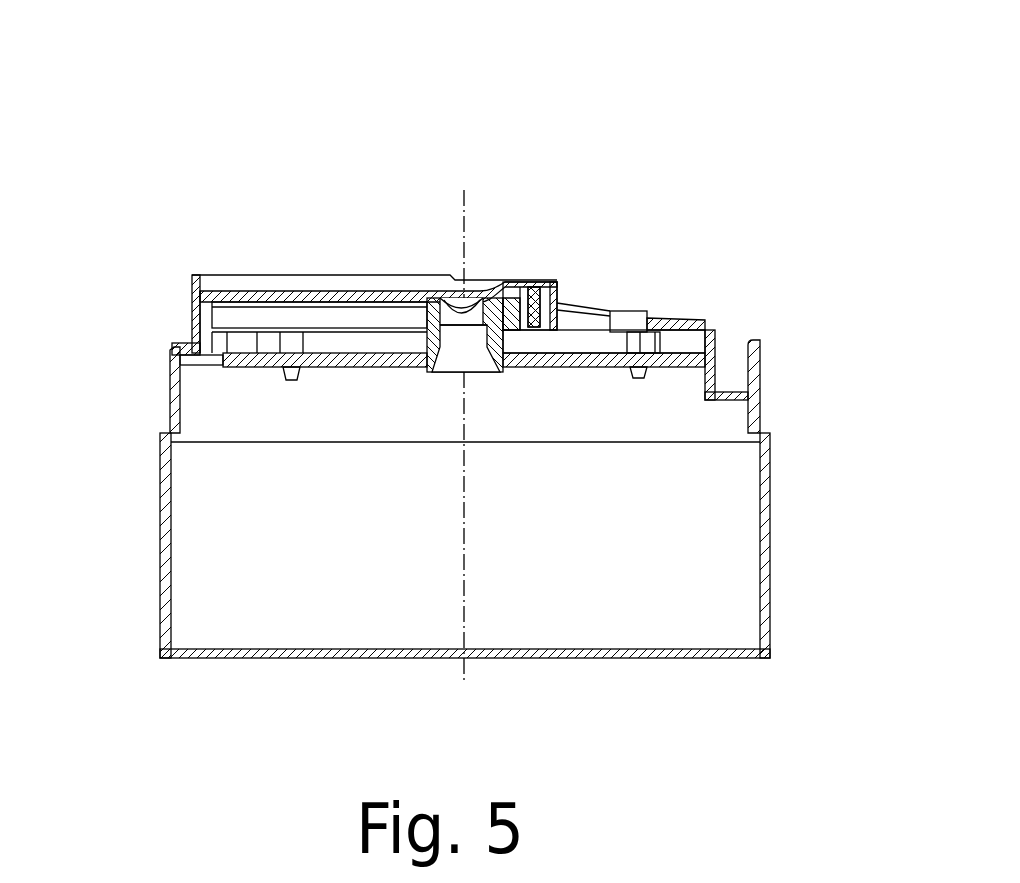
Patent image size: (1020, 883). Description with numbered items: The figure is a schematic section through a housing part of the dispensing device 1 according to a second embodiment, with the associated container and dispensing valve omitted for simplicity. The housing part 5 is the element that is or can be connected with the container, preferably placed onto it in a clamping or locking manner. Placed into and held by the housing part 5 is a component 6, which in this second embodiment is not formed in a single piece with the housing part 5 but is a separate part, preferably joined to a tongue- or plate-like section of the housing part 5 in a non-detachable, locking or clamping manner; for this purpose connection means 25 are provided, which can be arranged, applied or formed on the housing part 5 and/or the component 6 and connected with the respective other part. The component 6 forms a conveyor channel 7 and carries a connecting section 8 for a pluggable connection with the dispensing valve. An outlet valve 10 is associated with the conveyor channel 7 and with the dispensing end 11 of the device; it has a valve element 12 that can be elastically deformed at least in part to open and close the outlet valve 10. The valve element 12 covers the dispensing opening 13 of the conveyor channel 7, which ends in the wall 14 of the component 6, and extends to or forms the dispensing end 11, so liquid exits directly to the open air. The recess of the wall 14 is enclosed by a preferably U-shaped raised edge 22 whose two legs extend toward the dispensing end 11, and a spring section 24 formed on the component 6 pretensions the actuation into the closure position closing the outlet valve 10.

The dispensing device 1 is at (200, 205).
The housing part 5 is at (768, 545).
The component 6 is at (350, 305).
The conveyor channel 7 is at (503, 282).
The connecting section 8 is at (503, 352).
The outlet valve 10 is at (425, 275).
The dispensing end 11 is at (192, 293).
The valve element 12 is at (270, 297).
The dispensing opening 13 is at (462, 302).
The wall 14 is at (223, 358).
The edge 22 is at (557, 292).
The spring section 24 is at (633, 311).
The connection means 25 is at (283, 368).